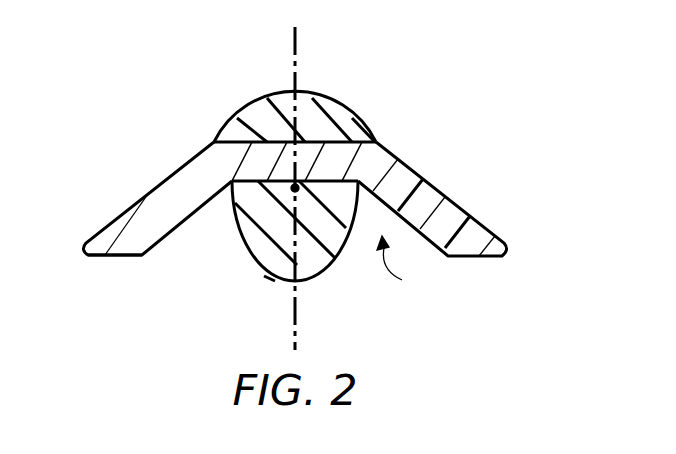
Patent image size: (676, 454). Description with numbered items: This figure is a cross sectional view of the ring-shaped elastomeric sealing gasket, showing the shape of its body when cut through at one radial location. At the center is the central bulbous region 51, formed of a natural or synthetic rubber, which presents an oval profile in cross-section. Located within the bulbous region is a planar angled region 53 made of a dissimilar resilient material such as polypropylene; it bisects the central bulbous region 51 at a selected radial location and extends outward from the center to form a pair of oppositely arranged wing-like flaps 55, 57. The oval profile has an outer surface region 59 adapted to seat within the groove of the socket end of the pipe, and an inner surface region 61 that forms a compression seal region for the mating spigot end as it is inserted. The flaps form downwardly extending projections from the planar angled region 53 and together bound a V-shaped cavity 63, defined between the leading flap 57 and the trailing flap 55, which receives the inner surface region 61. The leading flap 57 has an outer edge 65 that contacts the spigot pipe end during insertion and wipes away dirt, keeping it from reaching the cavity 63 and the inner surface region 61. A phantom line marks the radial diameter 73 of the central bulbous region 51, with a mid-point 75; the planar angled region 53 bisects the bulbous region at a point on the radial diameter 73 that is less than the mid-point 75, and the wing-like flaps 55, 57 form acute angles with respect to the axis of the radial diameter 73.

The central bulbous region 51 is at (312, 248).
The planar angled region 53 is at (260, 161).
The trailing flap 55 is at (422, 195).
The leading flap 57 is at (153, 207).
The outer surface region 59 is at (327, 97).
The inner surface region 61 is at (285, 283).
The V-shaped cavity 63 is at (397, 273).
The outer edge 65 is at (118, 257).
The radial diameter 73 is at (292, 43).
The mid-point 75 is at (295, 188).